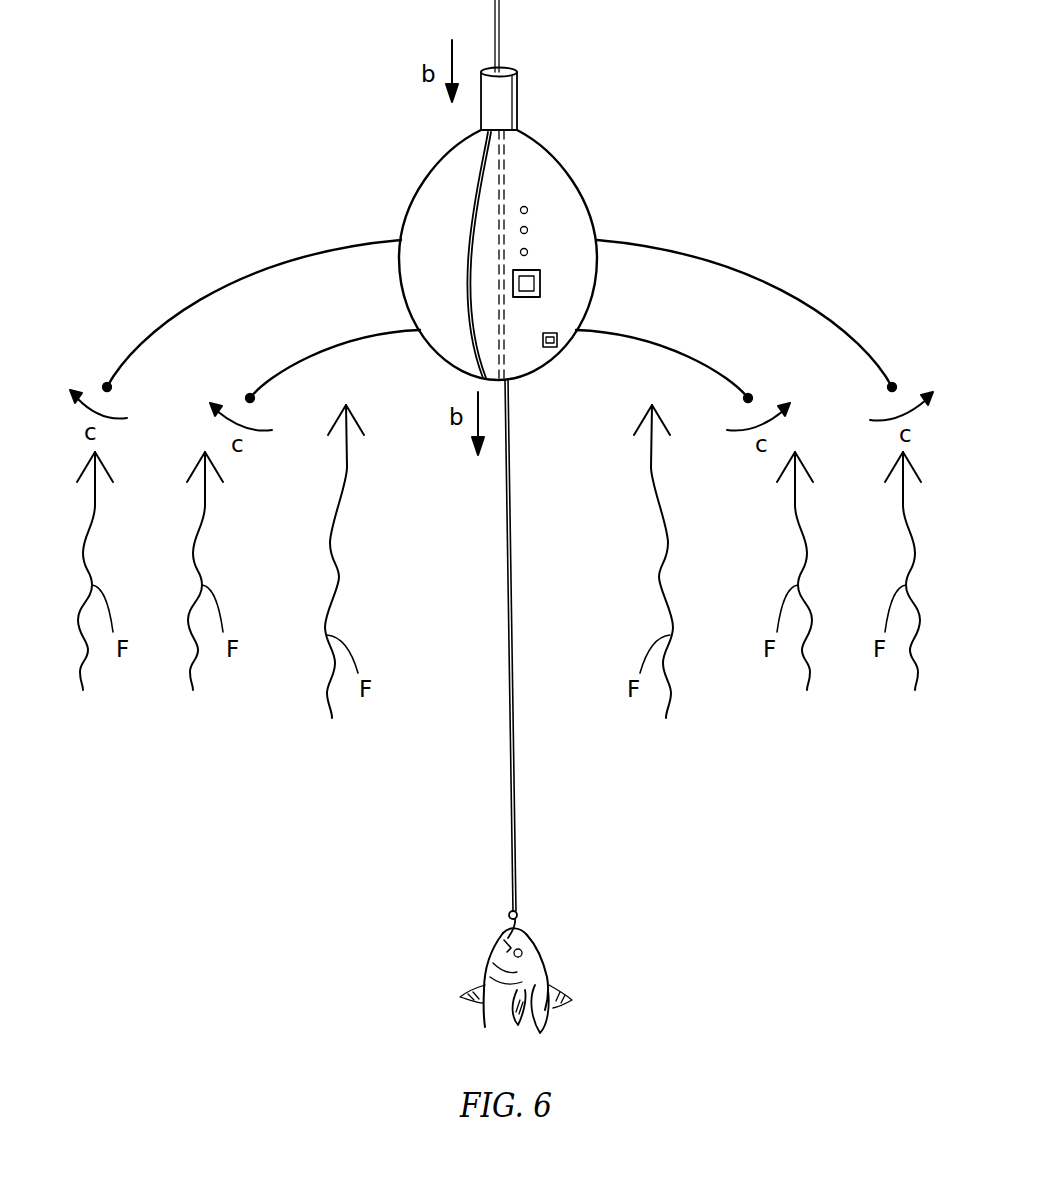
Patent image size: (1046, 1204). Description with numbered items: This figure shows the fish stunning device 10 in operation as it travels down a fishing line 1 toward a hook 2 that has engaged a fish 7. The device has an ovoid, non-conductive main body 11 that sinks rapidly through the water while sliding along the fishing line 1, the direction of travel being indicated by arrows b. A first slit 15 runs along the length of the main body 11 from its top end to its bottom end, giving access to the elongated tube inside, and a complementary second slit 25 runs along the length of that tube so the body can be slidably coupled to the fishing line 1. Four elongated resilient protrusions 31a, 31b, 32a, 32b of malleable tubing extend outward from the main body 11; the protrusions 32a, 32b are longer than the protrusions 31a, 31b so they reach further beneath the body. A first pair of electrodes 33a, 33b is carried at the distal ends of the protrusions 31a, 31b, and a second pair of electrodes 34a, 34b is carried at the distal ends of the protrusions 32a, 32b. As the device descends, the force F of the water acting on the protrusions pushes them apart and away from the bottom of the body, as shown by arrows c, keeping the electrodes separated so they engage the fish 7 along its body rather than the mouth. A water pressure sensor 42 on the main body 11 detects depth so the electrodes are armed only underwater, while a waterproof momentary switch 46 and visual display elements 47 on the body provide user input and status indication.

The fishing line 1 is at (512, 710).
The fishing hook 2 is at (522, 925).
The fish 7 is at (542, 975).
The fish stunning device 10 is at (285, 100).
The main body 11 is at (554, 163).
The first slit 15 is at (477, 182).
The second slit 25 is at (517, 90).
The elongated resilient protrusion 31a is at (375, 332).
The elongated resilient protrusion 31b is at (623, 332).
The elongated resilient protrusion 32a is at (278, 258).
The elongated resilient protrusion 32b is at (722, 258).
The electrode 33a is at (250, 393).
The electrode 33b is at (750, 393).
The electrode 34a is at (105, 380).
The electrode 34b is at (893, 380).
The water pressure sensor 42 is at (557, 342).
The waterproof momentary switch 46 is at (540, 275).
The visual display elements 47 is at (528, 252).